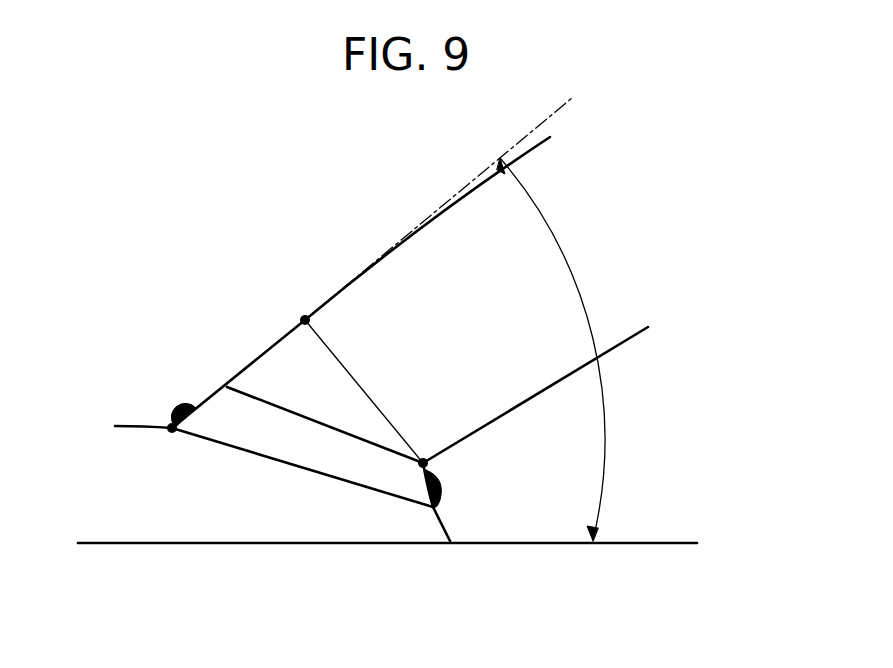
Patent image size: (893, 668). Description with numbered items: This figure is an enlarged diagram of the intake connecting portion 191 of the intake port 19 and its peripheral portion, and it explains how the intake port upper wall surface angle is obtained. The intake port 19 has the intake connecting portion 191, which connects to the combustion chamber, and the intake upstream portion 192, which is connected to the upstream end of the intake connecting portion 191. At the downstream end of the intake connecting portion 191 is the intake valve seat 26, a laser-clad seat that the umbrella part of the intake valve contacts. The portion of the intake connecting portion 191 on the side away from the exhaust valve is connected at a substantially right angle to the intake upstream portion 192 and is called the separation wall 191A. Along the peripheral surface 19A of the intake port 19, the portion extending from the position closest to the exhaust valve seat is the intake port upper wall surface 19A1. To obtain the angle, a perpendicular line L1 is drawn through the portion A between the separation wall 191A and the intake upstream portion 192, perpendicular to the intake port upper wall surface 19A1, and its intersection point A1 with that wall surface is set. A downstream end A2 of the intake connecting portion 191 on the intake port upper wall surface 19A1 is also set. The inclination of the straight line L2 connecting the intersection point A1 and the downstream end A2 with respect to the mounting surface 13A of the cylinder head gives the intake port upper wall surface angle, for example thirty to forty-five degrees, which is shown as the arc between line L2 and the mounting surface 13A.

The mounting surface 13A is at (403, 545).
The intake port 19 is at (570, 367).
The peripheral surface of the intake port 19A is at (628, 334).
The intake connecting portion 191 is at (217, 405).
The intake upstream portion 192 is at (417, 252).
The separation wall 191A is at (417, 474).
The intake port upper wall surface 19A1 is at (253, 360).
The intake valve seat 26 is at (189, 415).
The portion between the separation wall and the intake upstream portion A is at (430, 466).
The intersection point A1 is at (303, 320).
The downstream end of the intake connecting portion A2 is at (171, 425).
The perpendicular line L1 is at (368, 388).
The straight line L2 is at (453, 194).